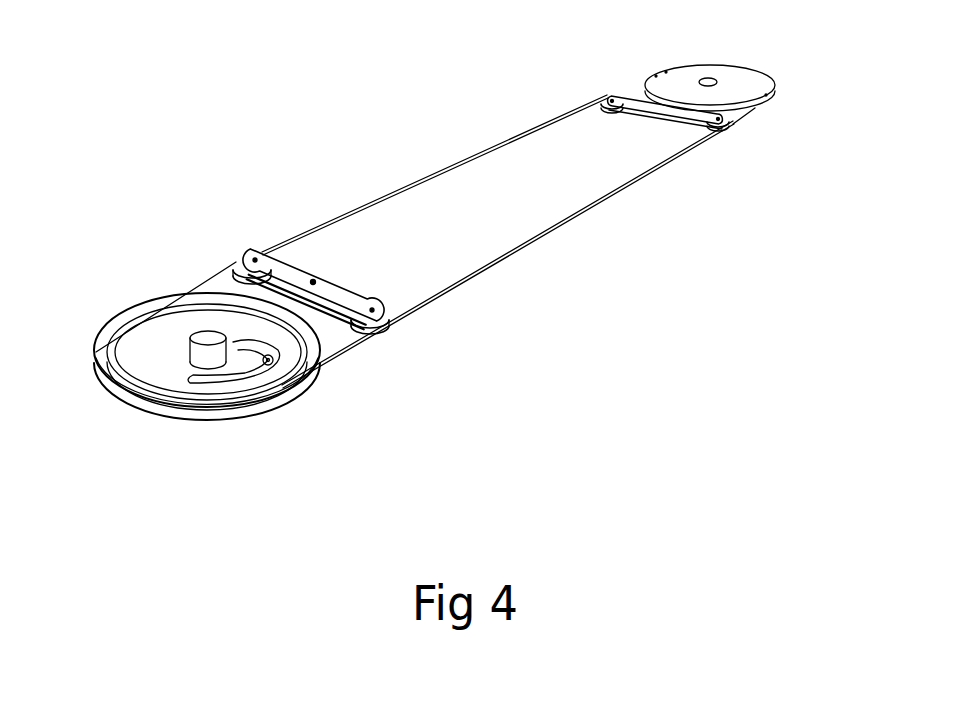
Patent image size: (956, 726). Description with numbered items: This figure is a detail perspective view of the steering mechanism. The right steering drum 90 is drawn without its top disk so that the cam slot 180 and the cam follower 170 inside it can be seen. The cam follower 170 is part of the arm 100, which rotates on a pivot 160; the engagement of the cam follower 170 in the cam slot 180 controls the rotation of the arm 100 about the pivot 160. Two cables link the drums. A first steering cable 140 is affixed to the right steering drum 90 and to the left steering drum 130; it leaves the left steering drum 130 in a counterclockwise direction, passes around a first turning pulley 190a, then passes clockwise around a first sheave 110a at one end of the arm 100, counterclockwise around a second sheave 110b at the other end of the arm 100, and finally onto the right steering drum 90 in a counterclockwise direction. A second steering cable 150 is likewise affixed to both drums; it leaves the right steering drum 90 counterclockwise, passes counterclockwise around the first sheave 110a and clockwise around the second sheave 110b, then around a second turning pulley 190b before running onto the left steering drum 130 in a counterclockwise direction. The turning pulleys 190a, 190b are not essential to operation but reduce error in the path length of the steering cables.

The right steering drum 90 is at (110, 393).
The arm 100 is at (338, 297).
The first sheave 110a is at (370, 323).
The second sheave 110b is at (245, 262).
The left steering drum 130 is at (712, 70).
The first steering cable 140 is at (500, 262).
The second steering cable 150 is at (465, 160).
The pivot 160 is at (313, 282).
The cam follower 170 is at (266, 366).
The cam slot 180 is at (227, 380).
The first turning pulley 190a is at (677, 123).
The second turning pulley 190b is at (613, 105).